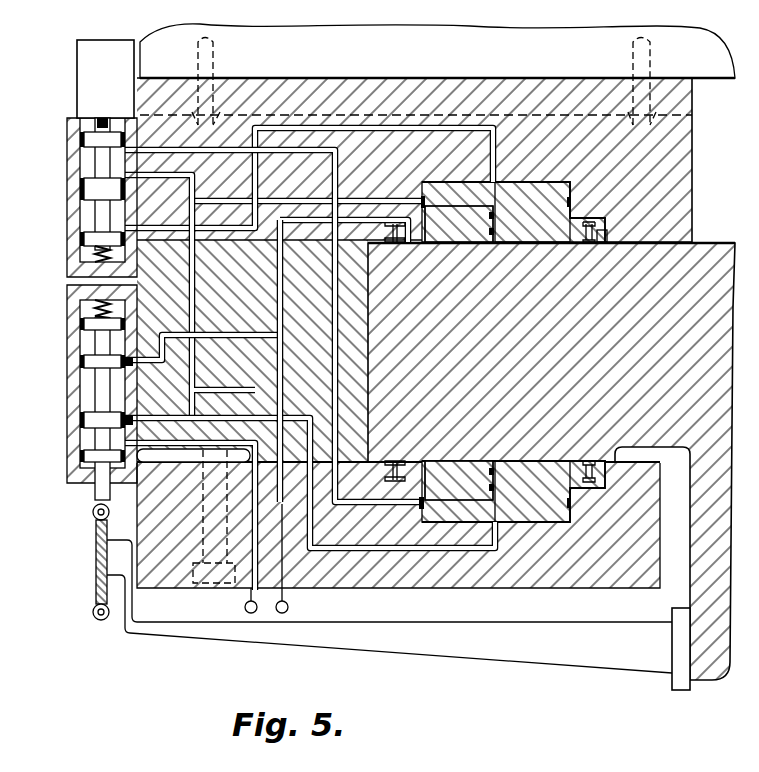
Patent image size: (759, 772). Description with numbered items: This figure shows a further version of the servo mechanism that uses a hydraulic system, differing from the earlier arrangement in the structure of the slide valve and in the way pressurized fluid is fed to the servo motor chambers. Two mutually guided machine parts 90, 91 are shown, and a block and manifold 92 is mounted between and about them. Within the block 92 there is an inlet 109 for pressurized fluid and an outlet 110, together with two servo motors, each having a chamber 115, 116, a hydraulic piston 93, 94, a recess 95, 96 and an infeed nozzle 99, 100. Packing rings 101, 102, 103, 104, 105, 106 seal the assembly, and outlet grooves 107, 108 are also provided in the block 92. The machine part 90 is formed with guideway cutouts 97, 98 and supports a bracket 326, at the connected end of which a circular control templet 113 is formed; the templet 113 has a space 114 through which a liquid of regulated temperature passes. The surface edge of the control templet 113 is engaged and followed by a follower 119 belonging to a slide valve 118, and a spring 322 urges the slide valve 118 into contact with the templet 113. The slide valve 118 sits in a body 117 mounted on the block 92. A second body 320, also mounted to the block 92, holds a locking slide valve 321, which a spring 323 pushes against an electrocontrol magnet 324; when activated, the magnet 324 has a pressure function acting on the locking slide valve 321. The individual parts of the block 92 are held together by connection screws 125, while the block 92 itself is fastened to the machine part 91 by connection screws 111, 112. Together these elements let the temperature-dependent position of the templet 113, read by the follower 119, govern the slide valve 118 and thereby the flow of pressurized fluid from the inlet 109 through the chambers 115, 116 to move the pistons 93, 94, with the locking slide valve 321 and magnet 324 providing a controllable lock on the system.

The machine part 90 is at (706, 252).
The machine part 91 is at (702, 72).
The block and manifold 92 is at (683, 160).
The hydraulic piston 93 is at (469, 192).
The hydraulic piston 94 is at (550, 523).
The recess 95 is at (525, 245).
The recess 96 is at (588, 460).
The guideway cutout 97 is at (585, 244).
The guideway cutout 98 is at (540, 460).
The infeed nozzle 99 is at (499, 244).
The infeed nozzle 100 is at (495, 460).
The packing ring 101 is at (394, 244).
The packing ring 102 is at (393, 460).
The packing ring 103 is at (418, 244).
The packing ring 104 is at (462, 453).
The packing ring 105 is at (429, 195).
The packing ring 106 is at (430, 507).
The outlet groove 107 is at (601, 244).
The outlet groove 108 is at (449, 460).
The inlet 109 is at (244, 607).
The outlet 110 is at (289, 607).
The connection screw 111 is at (214, 60).
The connection screw 112 is at (692, 115).
The circular control templet 113 is at (92, 512).
The space 114 is at (92, 611).
The chamber 115 is at (518, 182).
The chamber 116 is at (526, 521).
The body 117 is at (76, 338).
The slide valve 118 is at (82, 362).
The follower 119 is at (97, 491).
The connection screw 125 is at (182, 589).
The second body 320 is at (70, 137).
The locking slide valve 321 is at (84, 189).
The spring 322 is at (95, 307).
The spring 323 is at (90, 258).
The electrocontrol magnet 324 is at (77, 75).
The bracket 326 is at (362, 632).